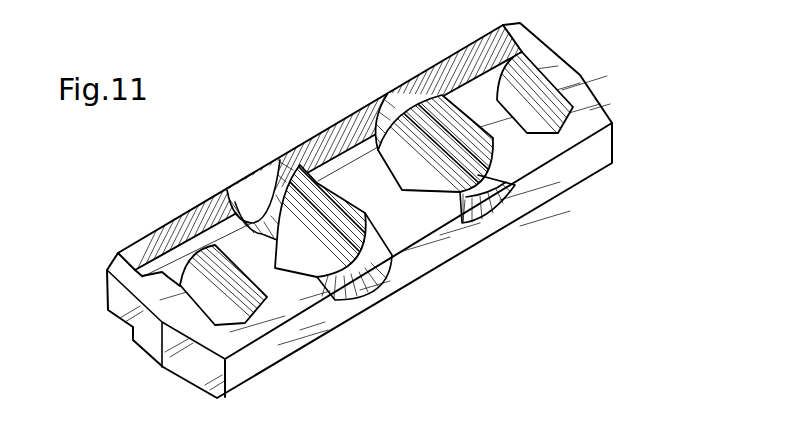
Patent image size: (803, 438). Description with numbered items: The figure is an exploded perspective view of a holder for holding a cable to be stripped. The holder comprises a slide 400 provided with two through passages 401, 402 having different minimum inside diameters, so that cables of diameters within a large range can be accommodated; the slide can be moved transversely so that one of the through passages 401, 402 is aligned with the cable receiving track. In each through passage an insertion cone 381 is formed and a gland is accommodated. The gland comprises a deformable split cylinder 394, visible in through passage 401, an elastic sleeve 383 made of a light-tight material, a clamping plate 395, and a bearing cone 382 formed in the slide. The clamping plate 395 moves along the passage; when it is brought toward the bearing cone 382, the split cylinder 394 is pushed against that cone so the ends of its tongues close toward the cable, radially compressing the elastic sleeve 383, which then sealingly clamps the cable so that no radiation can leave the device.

The slide 400 is at (603, 143).
The clamping plate 395 is at (427, 82).
The elastic sleeve 383 is at (266, 198).
The deformable split cylinder 394 is at (342, 193).
The through passage 402 is at (358, 277).
The insertion cone 381 is at (488, 207).
The through passage 401 is at (487, 195).
The bearing cone 382 is at (437, 198).